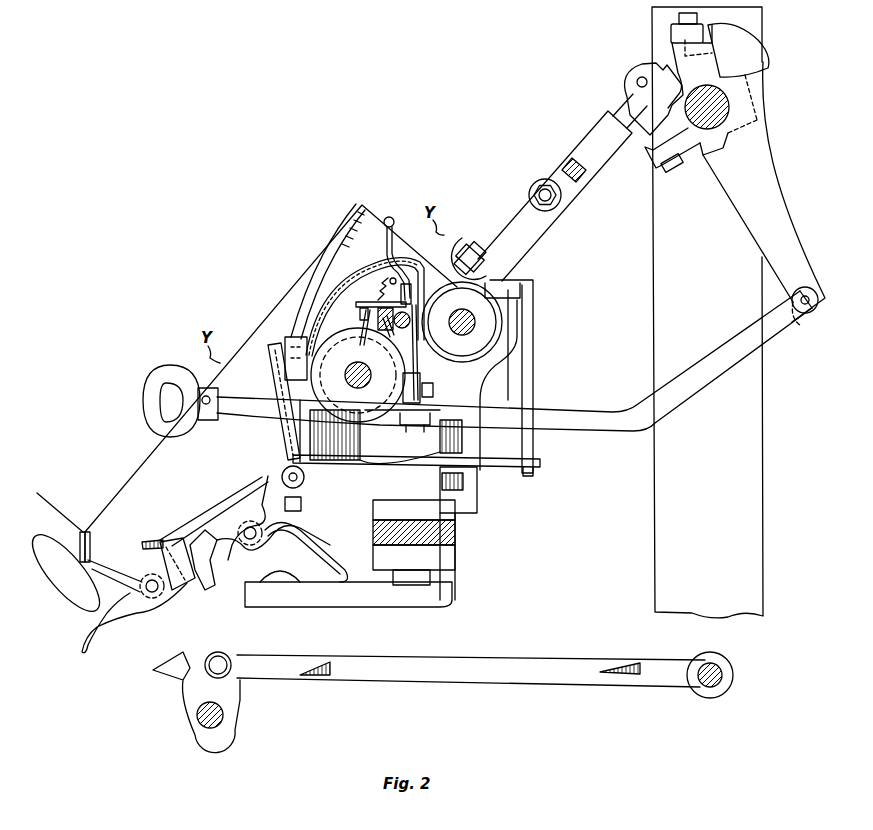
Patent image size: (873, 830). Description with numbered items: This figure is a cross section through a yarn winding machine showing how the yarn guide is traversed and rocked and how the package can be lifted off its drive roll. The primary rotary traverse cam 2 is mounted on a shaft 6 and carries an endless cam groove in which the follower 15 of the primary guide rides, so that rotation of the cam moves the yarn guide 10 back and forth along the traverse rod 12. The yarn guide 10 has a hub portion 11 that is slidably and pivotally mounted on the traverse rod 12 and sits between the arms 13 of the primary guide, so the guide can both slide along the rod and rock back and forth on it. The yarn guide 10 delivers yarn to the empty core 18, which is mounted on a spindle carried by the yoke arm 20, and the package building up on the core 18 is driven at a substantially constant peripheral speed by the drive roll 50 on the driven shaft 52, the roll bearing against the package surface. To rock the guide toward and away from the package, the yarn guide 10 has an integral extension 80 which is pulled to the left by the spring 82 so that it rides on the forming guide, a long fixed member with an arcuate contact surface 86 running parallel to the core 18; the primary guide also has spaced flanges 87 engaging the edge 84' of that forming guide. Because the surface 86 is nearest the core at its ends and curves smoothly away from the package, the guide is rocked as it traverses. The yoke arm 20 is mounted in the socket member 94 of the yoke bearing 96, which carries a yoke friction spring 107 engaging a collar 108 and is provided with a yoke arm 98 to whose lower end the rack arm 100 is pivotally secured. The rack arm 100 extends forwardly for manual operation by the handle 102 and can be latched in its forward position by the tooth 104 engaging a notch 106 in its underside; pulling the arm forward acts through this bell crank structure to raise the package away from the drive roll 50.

The primary rotary traverse cam 2 is at (358, 375).
The shaft 6 is at (346, 381).
The yarn guide 10 is at (403, 225).
The hub portion 11 is at (410, 322).
The traverse rod 12 is at (396, 283).
The arms 13 is at (418, 340).
The follower 15 is at (400, 335).
The empty core 18 is at (470, 237).
The yoke arm 20 is at (598, 164).
The drive roll 50 is at (453, 284).
The driven shaft 52 is at (464, 334).
The integral extension 80 is at (358, 300).
The spring 82 is at (390, 282).
The edge 84' is at (350, 336).
The arcuate contact surface 86 is at (360, 316).
The spaced flanges 87 is at (377, 346).
The socket member 94 is at (626, 98).
The yoke bearing 96 is at (738, 88).
The yoke arm 98 is at (760, 186).
The rack arm 100 is at (698, 400).
The handle 102 is at (148, 384).
The tooth 104 is at (283, 420).
The notch 106 is at (404, 425).
The yoke friction spring 107 is at (671, 33).
The collar 108 is at (745, 40).